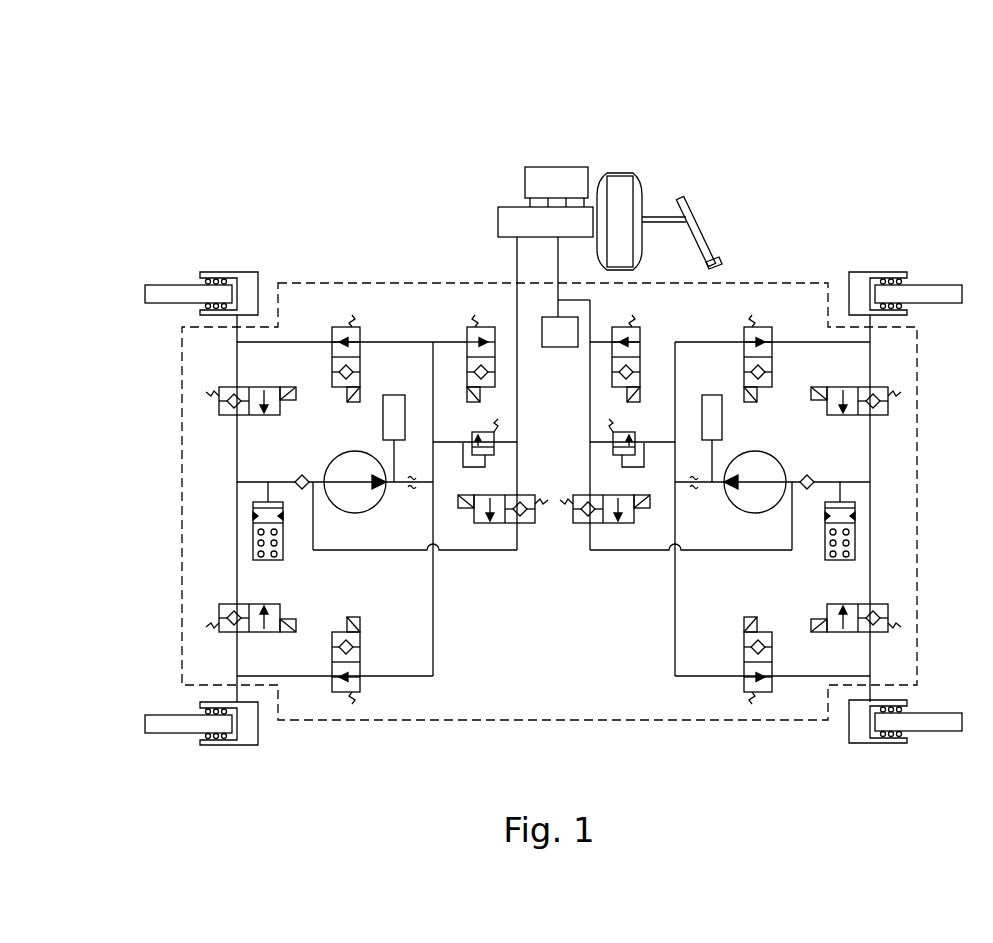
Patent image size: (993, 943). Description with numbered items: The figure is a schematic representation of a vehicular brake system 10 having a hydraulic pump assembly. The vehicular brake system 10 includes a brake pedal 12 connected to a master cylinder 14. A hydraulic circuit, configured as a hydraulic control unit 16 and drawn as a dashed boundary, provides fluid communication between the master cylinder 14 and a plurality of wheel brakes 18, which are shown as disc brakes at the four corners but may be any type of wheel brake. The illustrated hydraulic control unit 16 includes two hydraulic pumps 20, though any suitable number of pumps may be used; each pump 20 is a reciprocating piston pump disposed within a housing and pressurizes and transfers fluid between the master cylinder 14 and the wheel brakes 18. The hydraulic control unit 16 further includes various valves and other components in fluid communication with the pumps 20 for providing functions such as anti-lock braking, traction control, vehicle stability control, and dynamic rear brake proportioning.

The vehicular brake system 10 is at (286, 203).
The brake pedal 12 is at (690, 218).
The master cylinder 14 is at (497, 218).
The hydraulic control unit 16 is at (783, 268).
The wheel brake 18 is at (216, 272).
The hydraulic pump 20 is at (354, 447).